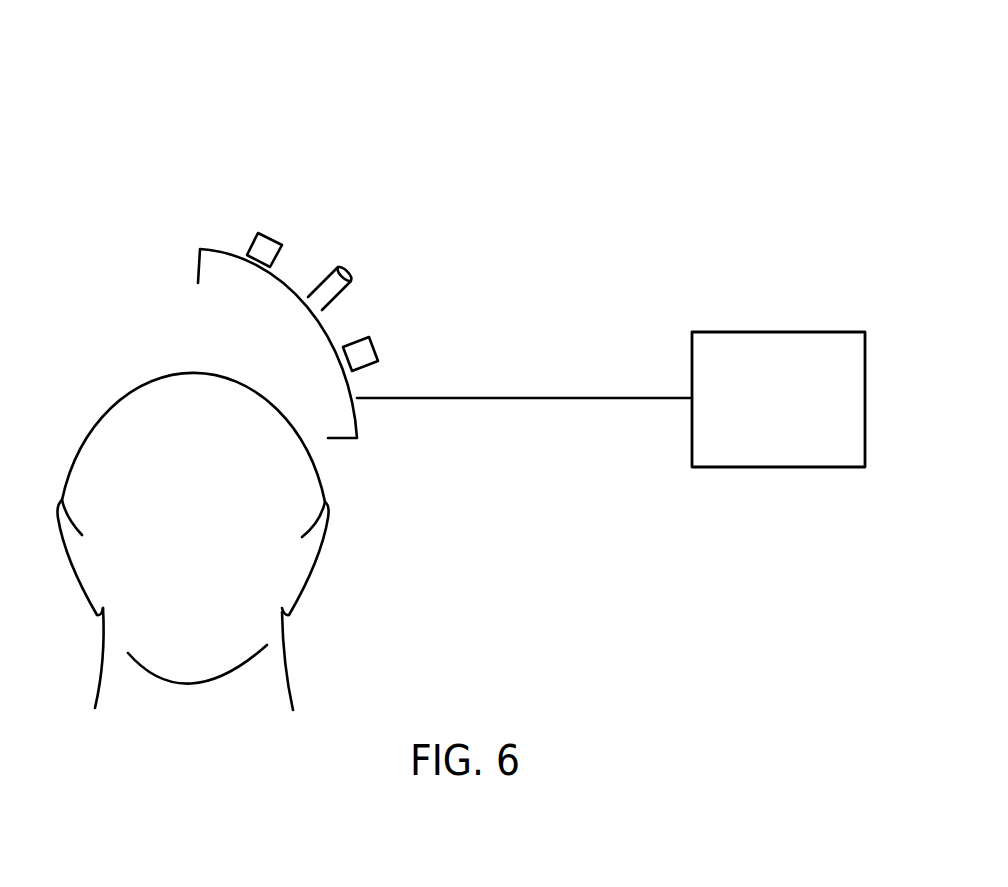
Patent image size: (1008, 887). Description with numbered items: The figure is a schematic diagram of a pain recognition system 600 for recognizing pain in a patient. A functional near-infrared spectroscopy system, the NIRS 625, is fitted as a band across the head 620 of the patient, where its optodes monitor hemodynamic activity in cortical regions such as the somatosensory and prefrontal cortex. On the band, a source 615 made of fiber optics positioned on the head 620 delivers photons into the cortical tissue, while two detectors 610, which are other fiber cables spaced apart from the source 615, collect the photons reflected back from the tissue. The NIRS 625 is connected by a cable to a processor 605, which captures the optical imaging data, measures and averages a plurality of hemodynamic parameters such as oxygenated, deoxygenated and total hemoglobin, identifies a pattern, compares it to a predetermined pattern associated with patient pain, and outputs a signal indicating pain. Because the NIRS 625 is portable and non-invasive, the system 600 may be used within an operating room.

The pain recognition system 600 is at (578, 79).
The processor 605 is at (777, 331).
The detectors 610 is at (276, 238).
The source 615 is at (350, 271).
The head 620 is at (295, 464).
The functional near-infrared spectroscopy system (NIRS) 625 is at (494, 164).